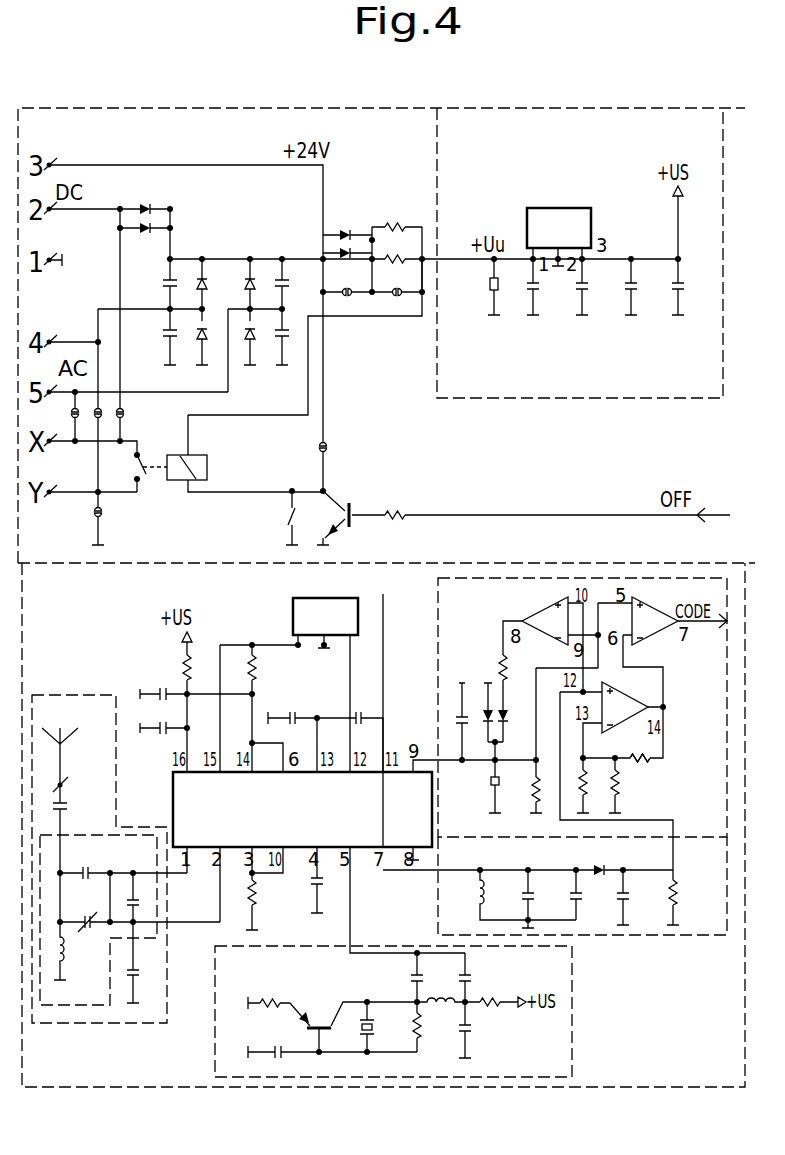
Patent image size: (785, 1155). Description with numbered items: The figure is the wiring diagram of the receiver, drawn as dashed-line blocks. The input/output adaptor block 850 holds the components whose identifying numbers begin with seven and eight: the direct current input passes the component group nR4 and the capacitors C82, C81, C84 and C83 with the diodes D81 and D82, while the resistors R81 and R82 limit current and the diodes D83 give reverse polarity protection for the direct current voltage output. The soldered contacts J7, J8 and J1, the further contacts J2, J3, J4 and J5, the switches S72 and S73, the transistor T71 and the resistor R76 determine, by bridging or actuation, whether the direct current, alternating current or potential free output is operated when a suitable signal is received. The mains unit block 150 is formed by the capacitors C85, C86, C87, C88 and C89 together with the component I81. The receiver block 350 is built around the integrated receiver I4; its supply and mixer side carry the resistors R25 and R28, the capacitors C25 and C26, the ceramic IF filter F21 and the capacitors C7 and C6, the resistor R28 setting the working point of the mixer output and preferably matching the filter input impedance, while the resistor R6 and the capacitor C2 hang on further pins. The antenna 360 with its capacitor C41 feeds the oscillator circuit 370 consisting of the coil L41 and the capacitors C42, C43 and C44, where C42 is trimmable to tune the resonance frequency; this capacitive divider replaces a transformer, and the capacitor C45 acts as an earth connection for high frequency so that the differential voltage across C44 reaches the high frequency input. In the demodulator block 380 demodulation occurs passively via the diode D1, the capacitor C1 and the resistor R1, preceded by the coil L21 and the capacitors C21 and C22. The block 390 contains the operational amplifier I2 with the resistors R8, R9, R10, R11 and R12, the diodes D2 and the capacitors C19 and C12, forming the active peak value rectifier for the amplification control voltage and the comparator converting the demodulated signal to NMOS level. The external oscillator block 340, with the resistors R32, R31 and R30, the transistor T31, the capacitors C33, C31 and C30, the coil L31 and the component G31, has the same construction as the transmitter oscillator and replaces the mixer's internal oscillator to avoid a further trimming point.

The power supply and switching block 850 is at (386, 335).
The voltage regulator block 150 is at (580, 253).
The receiver block 350 is at (383, 825).
The antenna 360 is at (99, 858).
The oscillator circuit 370 is at (98, 920).
The IF filter circuit 380 is at (582, 885).
The comparator/decoder circuit 390 is at (582, 707).
The oscillator circuit 340 is at (393, 1011).
The diode resistor network nR4 is at (145, 231).
The capacitor C82 is at (160, 284).
The capacitor C81 is at (160, 337).
The diode pair D81 is at (193, 312).
The diode pair D82 is at (239, 312).
The capacitor C84 is at (273, 284).
The capacitor C83 is at (273, 337).
The diode D83 is at (347, 257).
The resistor R81 is at (397, 242).
The resistor R82 is at (400, 246).
The jumper J7 is at (347, 303).
The jumper J8 is at (397, 303).
The soldered contact J1 is at (335, 391).
The switch S72 is at (279, 518).
The transistor T71 is at (327, 518).
The resistor R76 is at (541, 530).
The switch S73 is at (170, 455).
The soldered contact J2 is at (63, 416).
The soldered contact J3 is at (108, 407).
The soldered contact J4 is at (135, 417).
The soldered contact J5 is at (109, 518).
The capacitor C85 is at (481, 287).
The capacitor C86 is at (523, 287).
The capacitor C87 is at (571, 287).
The capacitor C88 is at (620, 287).
The capacitor C89 is at (667, 250).
The component I81 is at (553, 210).
The resistor R25 is at (200, 713).
The resistor R28 is at (239, 708).
The capacitor C25 is at (196, 683).
The capacitor C26 is at (163, 717).
The filter F21 is at (325, 612).
The capacitor C7 is at (292, 705).
The capacitor C6 is at (350, 729).
The receiver IC I4 is at (302, 809).
The resistor R6 is at (265, 888).
The capacitor C2 is at (330, 880).
The capacitor C41 is at (50, 808).
The capacitor C43 is at (123, 889).
The trimmable capacitor C42 is at (140, 934).
The capacitor C44 is at (144, 897).
The capacitor C45 is at (147, 962).
The coil L41 is at (50, 951).
The operational amplifier I2 is at (600, 665).
The resistor R8 is at (517, 652).
The diode pair D2 is at (487, 730).
The capacitor C19 is at (454, 721).
The capacitor C12 is at (509, 794).
The resistor R9 is at (547, 740).
The resistor R11 is at (596, 785).
The resistor R12 is at (629, 785).
The resistor R10 is at (633, 745).
The inductor L21 is at (528, 895).
The capacitor C21 is at (543, 895).
The capacitor C22 is at (590, 895).
The diode D1 is at (603, 857).
The capacitor C1 is at (637, 897).
The resistor R1 is at (686, 897).
The resistor R32 is at (335, 981).
The transistor T31 is at (328, 1016).
The capacitor C33 is at (332, 1042).
The crystal G31 is at (355, 1027).
The resistor R31 is at (404, 1027).
The inductor L31 is at (423, 988).
The capacitor C31 is at (454, 977).
The capacitor C30 is at (452, 1030).
The resistor R30 is at (503, 989).